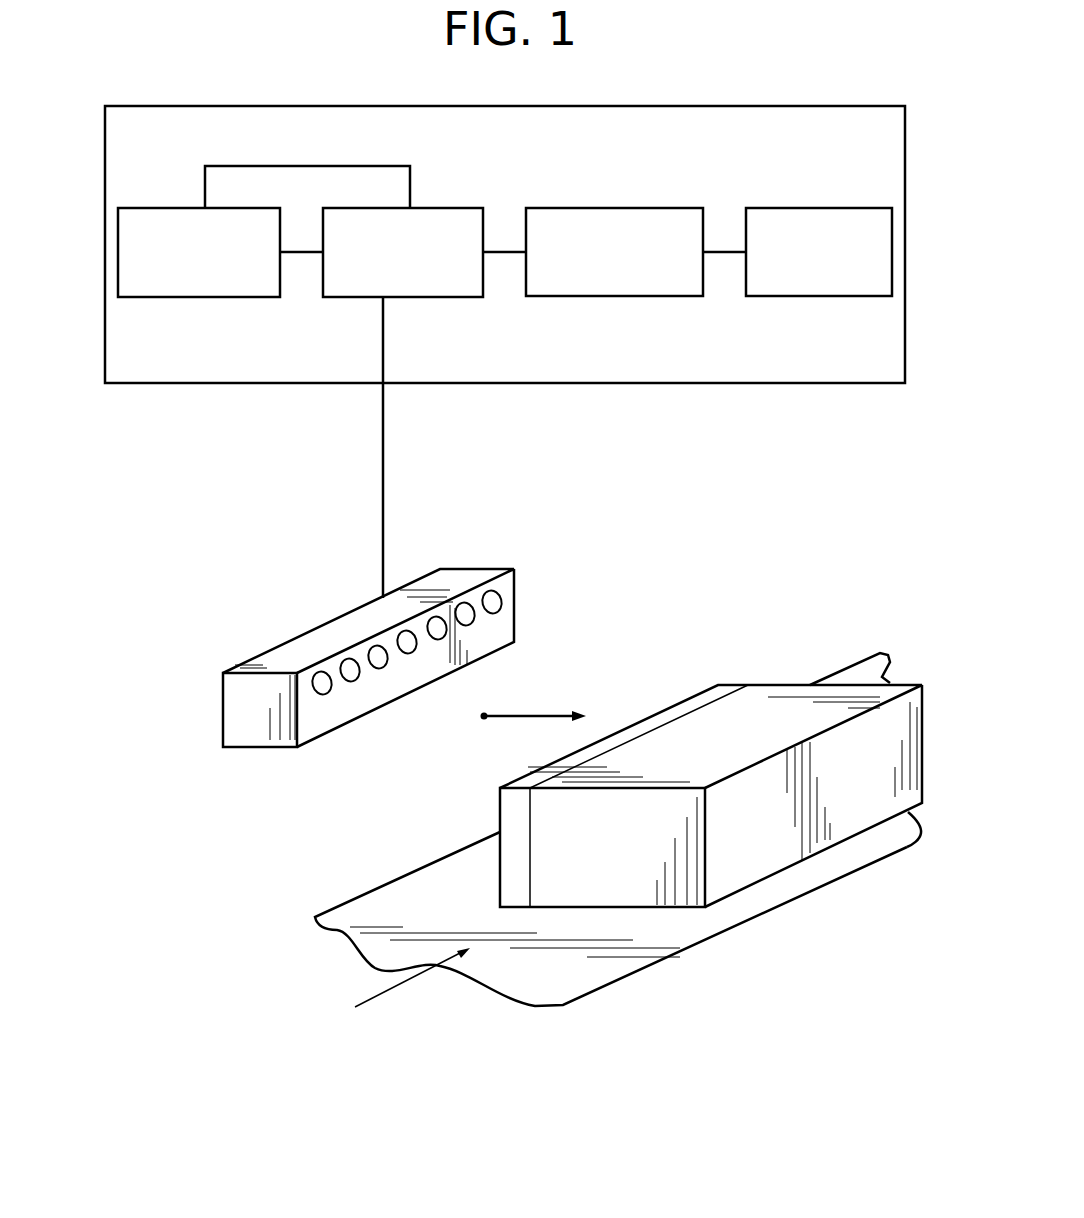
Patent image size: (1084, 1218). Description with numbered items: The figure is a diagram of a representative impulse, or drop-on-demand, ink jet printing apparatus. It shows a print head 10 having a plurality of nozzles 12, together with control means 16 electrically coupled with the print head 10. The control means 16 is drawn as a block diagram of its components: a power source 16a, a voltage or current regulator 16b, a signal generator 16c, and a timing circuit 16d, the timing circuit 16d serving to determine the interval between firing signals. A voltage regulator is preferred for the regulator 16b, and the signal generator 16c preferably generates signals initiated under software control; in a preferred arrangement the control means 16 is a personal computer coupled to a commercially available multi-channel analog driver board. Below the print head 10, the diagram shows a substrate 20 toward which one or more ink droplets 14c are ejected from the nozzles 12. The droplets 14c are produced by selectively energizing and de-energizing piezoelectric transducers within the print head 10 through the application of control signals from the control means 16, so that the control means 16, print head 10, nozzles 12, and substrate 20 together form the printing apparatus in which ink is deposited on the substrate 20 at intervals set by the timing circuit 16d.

The print head 10 is at (250, 750).
The nozzles 12 is at (355, 678).
The ink droplets 14c is at (484, 716).
The control means 16 is at (870, 141).
The power source 16a is at (883, 243).
The voltage or current regulator 16b is at (693, 243).
The signal generator 16c is at (473, 243).
The timing circuit 16d is at (272, 244).
The substrate 20 is at (583, 908).